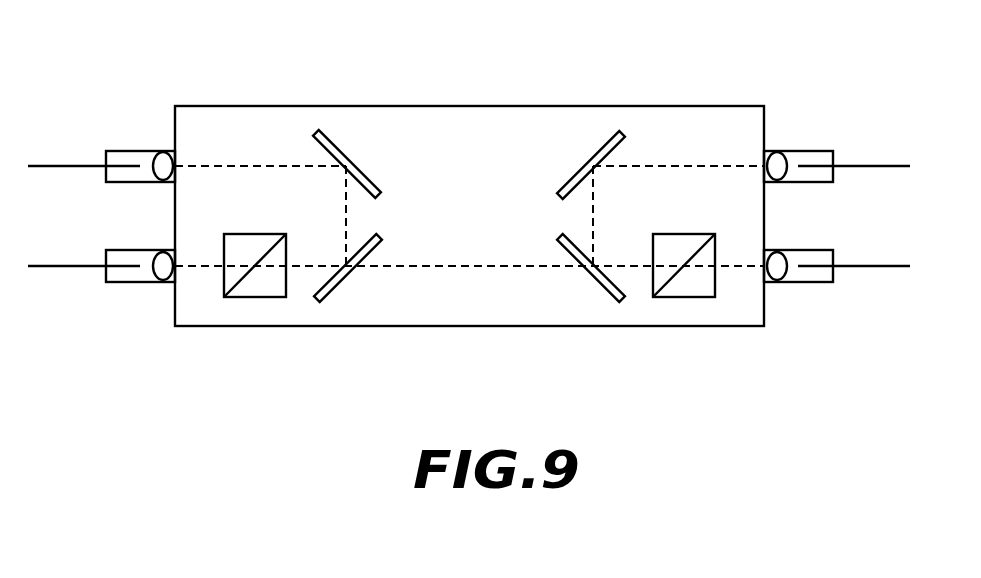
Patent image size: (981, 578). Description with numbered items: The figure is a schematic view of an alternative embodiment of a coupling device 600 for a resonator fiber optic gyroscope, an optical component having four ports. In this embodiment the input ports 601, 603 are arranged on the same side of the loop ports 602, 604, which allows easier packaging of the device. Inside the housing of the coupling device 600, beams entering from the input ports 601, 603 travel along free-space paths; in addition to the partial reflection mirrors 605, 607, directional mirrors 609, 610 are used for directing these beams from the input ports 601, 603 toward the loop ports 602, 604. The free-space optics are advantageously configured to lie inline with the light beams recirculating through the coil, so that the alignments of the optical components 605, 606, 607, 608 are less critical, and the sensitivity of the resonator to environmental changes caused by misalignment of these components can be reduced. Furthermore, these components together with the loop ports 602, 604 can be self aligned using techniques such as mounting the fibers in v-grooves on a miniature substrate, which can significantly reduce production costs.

The coupling device 600 is at (707, 106).
The input port 601 is at (805, 151).
The loop port 602 is at (807, 282).
The input port 603 is at (147, 151).
The loop port 604 is at (147, 282).
The partial reflection mirror 605 is at (603, 302).
The optical component 606 is at (687, 297).
The partial reflection mirror 607 is at (334, 302).
The optical component 608 is at (253, 297).
The directional mirror 609 is at (605, 132).
The directional mirror 610 is at (334, 132).